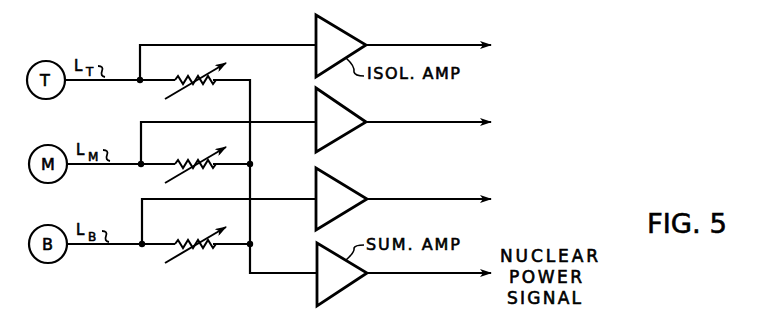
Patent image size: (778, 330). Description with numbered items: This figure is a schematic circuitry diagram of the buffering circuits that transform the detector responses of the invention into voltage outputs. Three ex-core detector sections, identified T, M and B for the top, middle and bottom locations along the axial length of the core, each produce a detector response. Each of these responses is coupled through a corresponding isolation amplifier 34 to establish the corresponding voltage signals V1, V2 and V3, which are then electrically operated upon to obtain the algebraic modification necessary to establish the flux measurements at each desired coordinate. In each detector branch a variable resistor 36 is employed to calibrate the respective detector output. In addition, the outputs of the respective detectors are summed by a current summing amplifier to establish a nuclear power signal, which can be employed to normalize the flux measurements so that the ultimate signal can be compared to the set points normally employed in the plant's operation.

The isolation amplifier 34 is at (346, 54).
The variable resistor 36 is at (221, 107).
The voltage signal V1 is at (443, 48).
The voltage signal V2 is at (442, 125).
The voltage signal V3 is at (443, 202).